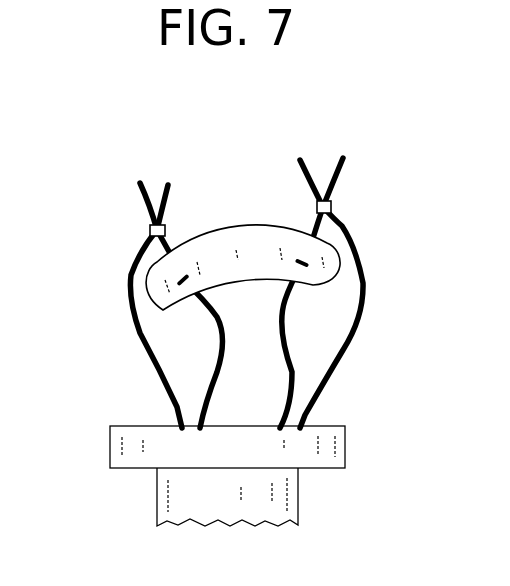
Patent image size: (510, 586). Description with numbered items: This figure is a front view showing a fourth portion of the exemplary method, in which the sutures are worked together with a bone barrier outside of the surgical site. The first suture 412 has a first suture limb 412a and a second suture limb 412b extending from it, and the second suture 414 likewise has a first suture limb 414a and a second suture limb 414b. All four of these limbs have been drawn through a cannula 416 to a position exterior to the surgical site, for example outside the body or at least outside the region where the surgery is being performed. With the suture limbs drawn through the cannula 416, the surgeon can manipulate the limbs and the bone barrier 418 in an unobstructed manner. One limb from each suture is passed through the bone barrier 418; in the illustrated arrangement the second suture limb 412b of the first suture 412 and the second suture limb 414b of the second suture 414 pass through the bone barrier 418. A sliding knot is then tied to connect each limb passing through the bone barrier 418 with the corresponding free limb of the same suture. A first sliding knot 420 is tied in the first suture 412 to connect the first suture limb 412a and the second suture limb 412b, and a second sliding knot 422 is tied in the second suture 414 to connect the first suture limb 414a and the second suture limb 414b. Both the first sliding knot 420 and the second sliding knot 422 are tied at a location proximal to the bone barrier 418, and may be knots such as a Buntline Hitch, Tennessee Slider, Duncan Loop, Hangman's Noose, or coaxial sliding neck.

The first suture 412 is at (136, 301).
The first suture limb 412a is at (140, 331).
The second suture limb 412b is at (175, 246).
The second suture 414 is at (340, 277).
The first suture limb 414a is at (366, 290).
The second suture limb 414b is at (313, 225).
The cannula 416 is at (298, 497).
The bone barrier 418 is at (250, 242).
The first sliding knot 420 is at (149, 229).
The second sliding knot 422 is at (332, 204).